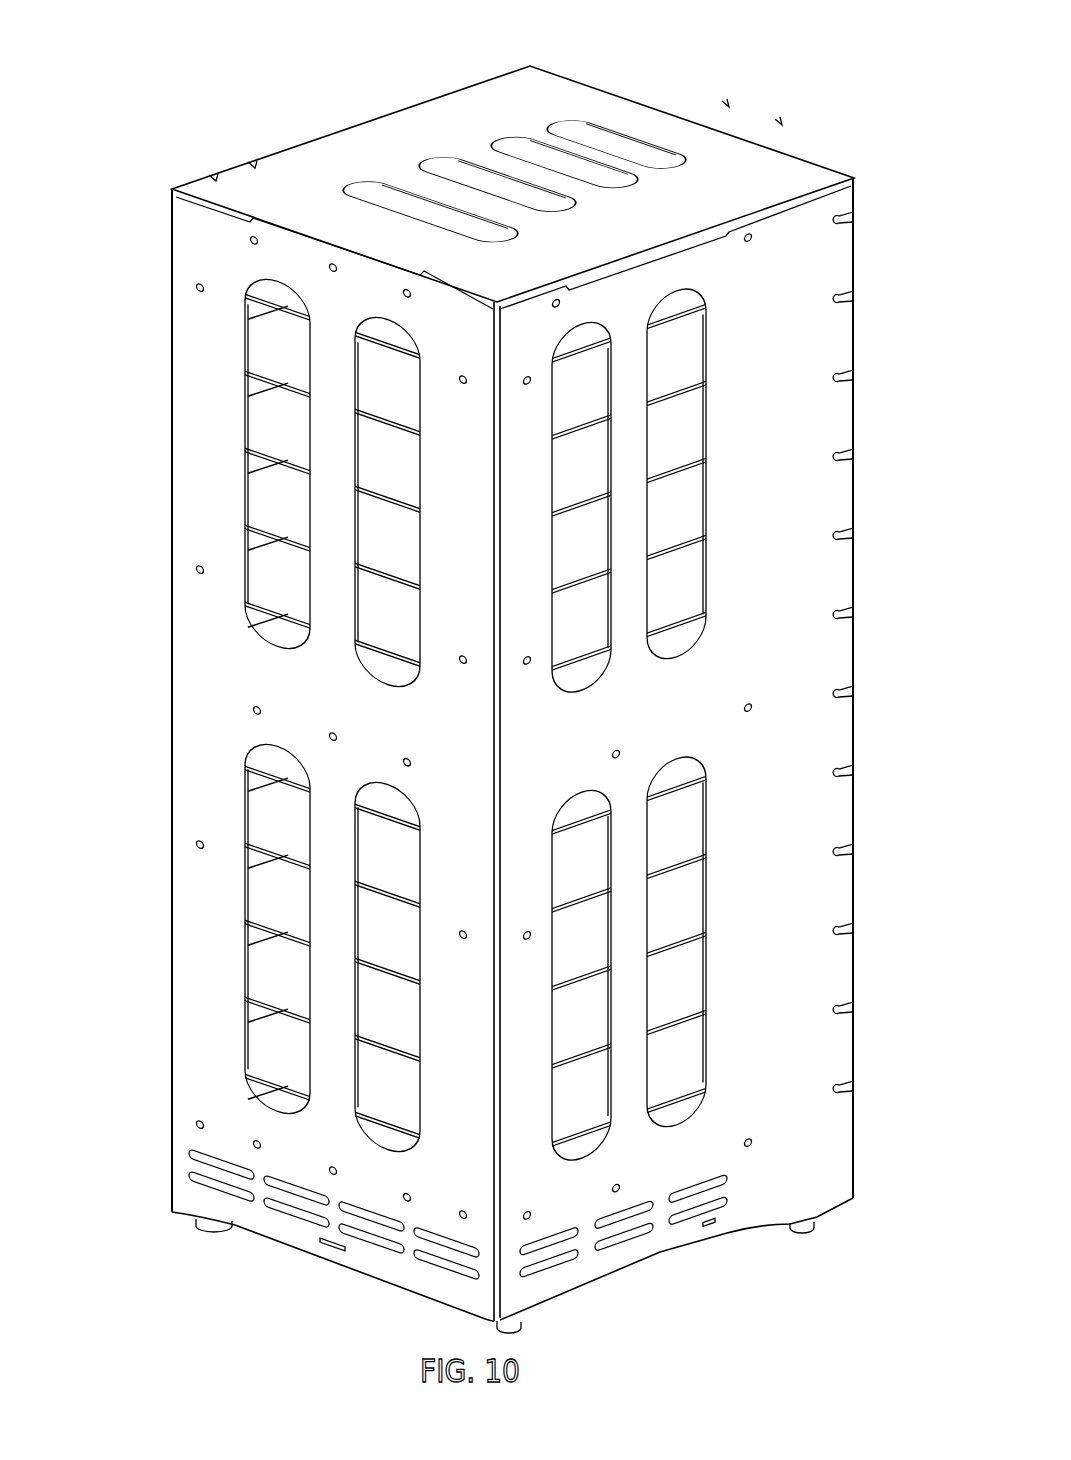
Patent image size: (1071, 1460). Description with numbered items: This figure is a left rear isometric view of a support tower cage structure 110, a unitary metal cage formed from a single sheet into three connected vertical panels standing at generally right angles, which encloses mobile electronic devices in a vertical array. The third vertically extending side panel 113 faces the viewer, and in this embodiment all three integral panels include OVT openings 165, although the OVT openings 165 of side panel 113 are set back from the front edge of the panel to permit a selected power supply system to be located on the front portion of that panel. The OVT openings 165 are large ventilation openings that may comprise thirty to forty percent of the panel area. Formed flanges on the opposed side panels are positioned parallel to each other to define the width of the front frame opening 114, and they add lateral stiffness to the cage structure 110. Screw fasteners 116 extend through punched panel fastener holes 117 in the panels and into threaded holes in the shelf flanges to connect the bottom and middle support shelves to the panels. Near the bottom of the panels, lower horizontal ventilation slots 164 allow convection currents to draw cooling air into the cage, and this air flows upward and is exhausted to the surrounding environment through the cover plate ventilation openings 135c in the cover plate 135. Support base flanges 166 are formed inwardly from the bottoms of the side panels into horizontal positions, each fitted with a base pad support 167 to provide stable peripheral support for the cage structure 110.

The support tower cage structure 110 is at (642, 59).
The cover plate 135 is at (723, 132).
The cover plate ventilation openings 135c is at (510, 153).
The third vertically extending side panel 113 is at (853, 257).
The front frame opening 114 is at (855, 775).
The OVT openings 165 is at (247, 773).
The screw fasteners 116 is at (198, 845).
The panel fastener holes 117 is at (337, 735).
The lower horizontal ventilation slots 164 is at (430, 1262).
The support base flanges 166 is at (830, 1211).
The base pad support 167 is at (797, 1233).